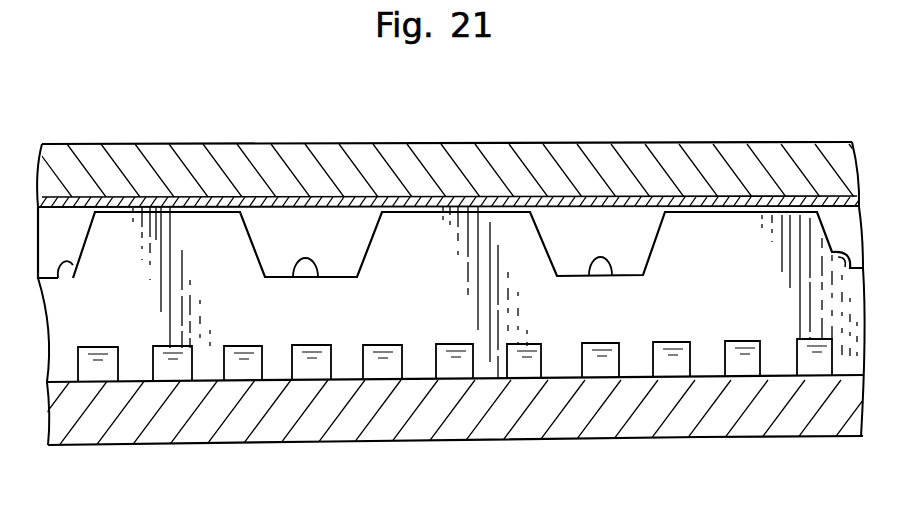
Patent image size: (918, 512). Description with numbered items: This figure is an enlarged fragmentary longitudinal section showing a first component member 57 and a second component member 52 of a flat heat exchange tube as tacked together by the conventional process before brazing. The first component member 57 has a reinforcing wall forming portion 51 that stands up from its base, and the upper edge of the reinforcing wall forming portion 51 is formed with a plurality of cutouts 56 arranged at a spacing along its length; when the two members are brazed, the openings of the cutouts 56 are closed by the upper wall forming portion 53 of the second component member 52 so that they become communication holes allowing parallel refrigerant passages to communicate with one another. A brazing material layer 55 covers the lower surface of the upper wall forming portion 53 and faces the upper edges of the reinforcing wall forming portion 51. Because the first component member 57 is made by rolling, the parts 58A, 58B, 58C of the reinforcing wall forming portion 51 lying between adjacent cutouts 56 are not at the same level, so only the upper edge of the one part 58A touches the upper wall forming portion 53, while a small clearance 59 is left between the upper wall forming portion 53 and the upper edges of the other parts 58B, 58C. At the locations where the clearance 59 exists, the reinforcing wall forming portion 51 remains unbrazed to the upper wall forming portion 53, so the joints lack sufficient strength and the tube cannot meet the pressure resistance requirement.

The reinforcing wall forming portion 51 is at (457, 384).
The second component member 52 is at (444, 136).
The upper wall forming portion 53 is at (318, 145).
The brazing material layer 55 is at (392, 205).
The cutouts 56 is at (73, 264).
The first component member 57 is at (683, 430).
The part of the reinforcing wall forming portion between adjacent cutouts 58A is at (168, 210).
The part of the reinforcing wall forming portion between adjacent cutouts 58B is at (478, 228).
The part of the reinforcing wall forming portion between adjacent cutouts 58C is at (718, 233).
The clearance 59 is at (422, 213).